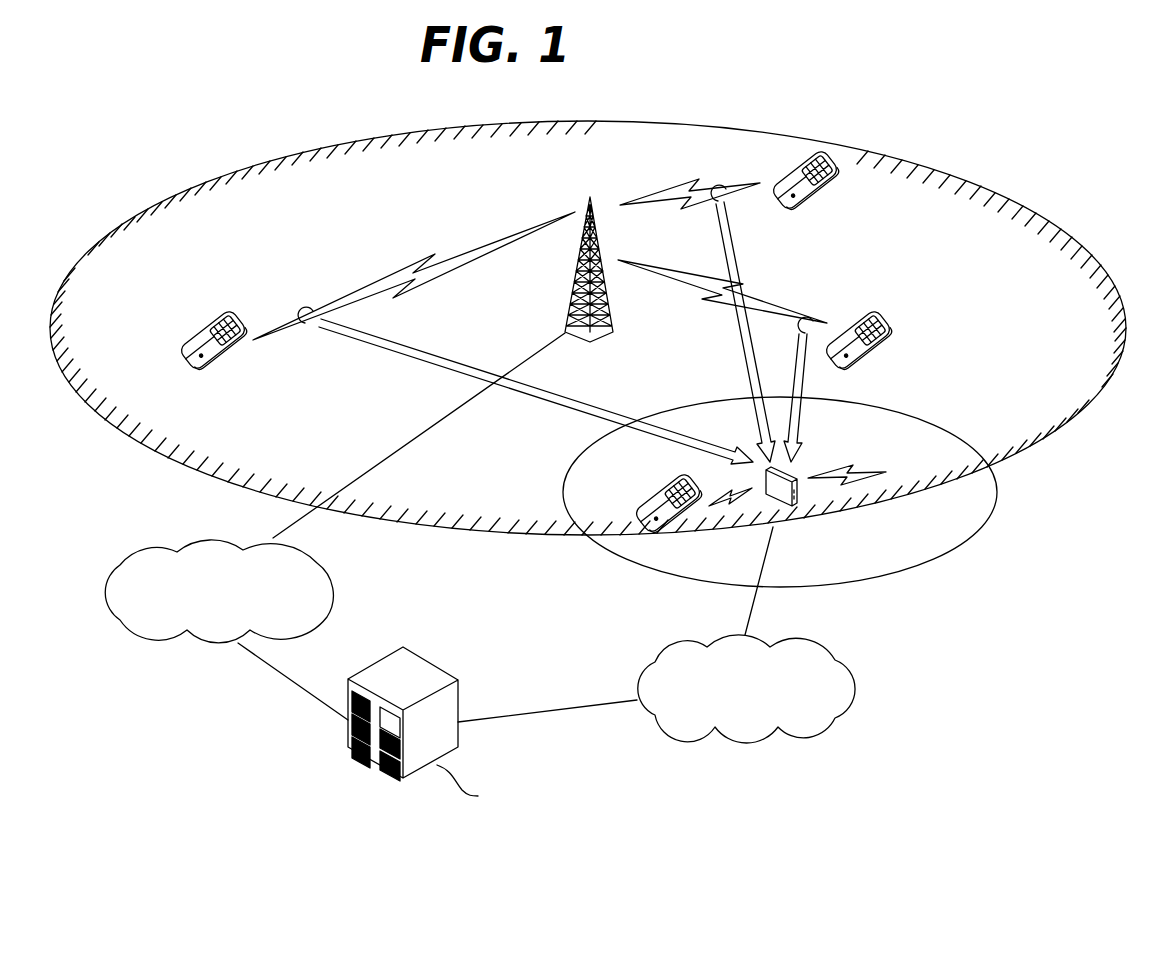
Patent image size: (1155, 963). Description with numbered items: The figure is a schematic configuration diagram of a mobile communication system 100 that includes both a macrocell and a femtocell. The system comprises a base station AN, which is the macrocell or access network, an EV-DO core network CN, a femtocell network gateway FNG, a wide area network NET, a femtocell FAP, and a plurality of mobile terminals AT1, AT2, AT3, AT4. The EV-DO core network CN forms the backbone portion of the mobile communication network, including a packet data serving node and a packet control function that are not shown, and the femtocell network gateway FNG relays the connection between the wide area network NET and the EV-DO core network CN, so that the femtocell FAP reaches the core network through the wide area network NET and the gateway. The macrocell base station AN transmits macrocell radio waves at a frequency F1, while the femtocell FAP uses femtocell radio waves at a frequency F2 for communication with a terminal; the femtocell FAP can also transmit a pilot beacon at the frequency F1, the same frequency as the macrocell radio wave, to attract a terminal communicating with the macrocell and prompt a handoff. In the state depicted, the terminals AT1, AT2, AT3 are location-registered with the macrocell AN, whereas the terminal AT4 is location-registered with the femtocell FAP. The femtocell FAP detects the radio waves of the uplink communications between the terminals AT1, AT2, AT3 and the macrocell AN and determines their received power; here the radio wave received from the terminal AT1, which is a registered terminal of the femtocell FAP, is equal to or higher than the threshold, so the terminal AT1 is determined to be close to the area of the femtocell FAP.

The mobile communication system 100 is at (928, 76).
The frequency F1 (macrocell radio wave frequency) F1 is at (688, 124).
The frequency F2 (femtocell radio wave frequency) F2 is at (905, 577).
The base station (macrocell, access network) AN is at (586, 206).
The terminal AT1 is at (888, 318).
The terminal AT2 is at (800, 150).
The terminal AT3 is at (224, 318).
The terminal AT4 is at (666, 490).
The femtocell FAP is at (758, 438).
The EV-DO core network CN is at (326, 563).
The femtocell network gateway FNG is at (436, 664).
The wide area network NET is at (858, 690).